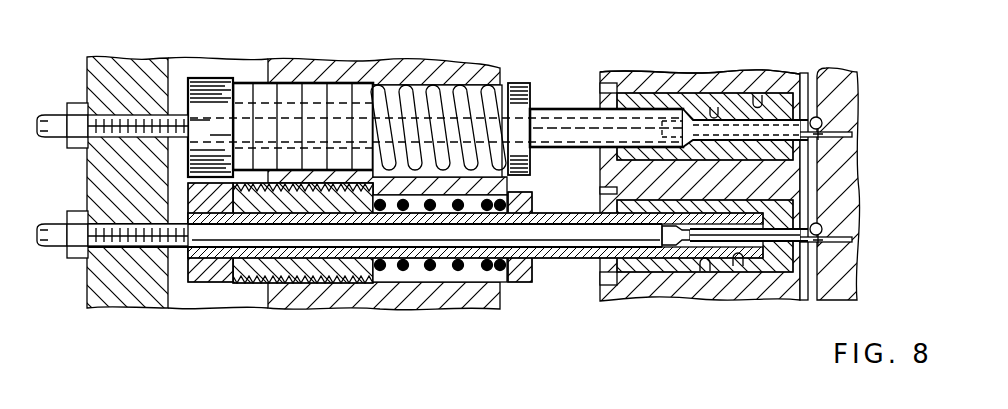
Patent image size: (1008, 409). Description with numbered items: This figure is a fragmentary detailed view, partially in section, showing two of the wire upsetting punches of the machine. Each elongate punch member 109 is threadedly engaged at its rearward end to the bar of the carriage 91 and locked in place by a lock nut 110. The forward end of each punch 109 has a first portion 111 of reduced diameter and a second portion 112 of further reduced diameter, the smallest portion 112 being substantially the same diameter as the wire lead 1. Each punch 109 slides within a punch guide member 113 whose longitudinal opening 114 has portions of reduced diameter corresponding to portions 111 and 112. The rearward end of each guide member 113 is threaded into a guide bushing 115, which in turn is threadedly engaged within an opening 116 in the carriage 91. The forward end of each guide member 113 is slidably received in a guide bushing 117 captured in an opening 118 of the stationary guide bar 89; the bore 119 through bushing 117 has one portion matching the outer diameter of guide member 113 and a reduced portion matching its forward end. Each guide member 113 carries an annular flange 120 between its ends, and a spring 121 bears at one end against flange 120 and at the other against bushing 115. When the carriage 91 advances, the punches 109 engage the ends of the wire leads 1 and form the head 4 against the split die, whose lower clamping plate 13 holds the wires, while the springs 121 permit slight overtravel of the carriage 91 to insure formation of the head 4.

The wire lead 1 is at (848, 138).
The head 4 is at (816, 121).
The lower clamping plate 13 is at (857, 185).
The stationary guide bar 89 is at (682, 69).
The carriage 91 is at (307, 60).
The punch member 109 is at (147, 110).
The lock nut 110 is at (70, 106).
The first portion 111 is at (697, 250).
The second portion 112 is at (772, 250).
The punch guide member 113 is at (560, 107).
The longitudinal opening 114 is at (328, 262).
The guide bushing 115 is at (241, 82).
The opening 116 is at (400, 88).
The guide bushing 117 is at (637, 97).
The opening 118 is at (755, 100).
The bore 119 is at (715, 106).
The annular flange 120 is at (517, 83).
The spring 121 is at (443, 88).